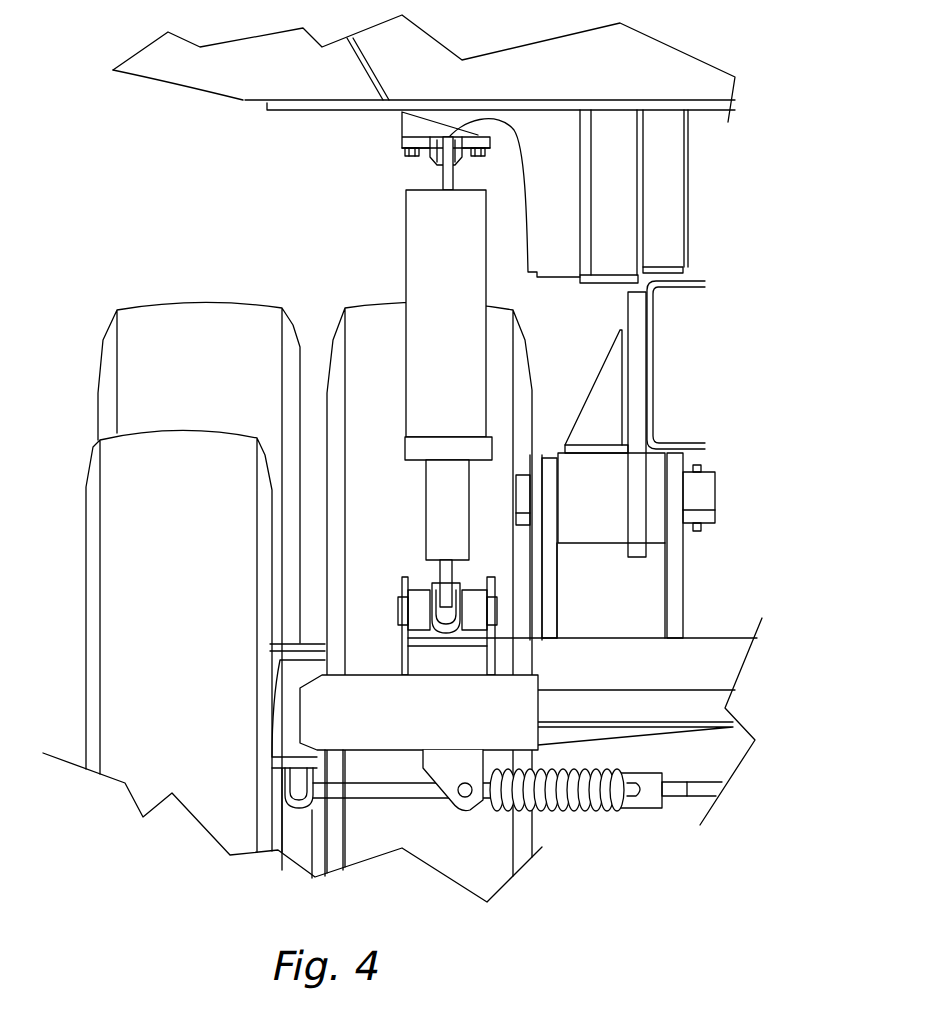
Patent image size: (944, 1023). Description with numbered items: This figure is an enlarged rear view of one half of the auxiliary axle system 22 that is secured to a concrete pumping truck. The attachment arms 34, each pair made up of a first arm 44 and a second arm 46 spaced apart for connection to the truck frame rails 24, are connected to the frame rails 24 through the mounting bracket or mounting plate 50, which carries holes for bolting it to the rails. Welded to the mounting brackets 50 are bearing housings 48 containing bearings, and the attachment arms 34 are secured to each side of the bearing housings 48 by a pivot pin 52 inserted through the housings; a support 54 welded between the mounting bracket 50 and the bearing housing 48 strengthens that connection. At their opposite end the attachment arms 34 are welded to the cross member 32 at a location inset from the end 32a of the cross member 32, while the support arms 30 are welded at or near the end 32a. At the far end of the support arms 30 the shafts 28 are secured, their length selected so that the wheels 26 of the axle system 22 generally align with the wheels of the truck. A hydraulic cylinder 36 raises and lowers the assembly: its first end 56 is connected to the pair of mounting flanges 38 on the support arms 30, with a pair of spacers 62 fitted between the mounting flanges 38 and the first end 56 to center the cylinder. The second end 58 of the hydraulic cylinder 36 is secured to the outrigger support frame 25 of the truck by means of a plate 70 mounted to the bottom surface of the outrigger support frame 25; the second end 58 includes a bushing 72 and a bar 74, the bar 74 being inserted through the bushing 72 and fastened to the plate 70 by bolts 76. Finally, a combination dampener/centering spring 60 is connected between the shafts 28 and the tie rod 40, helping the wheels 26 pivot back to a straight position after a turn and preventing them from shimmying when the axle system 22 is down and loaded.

The axle system 22 is at (699, 178).
The truck frame rails 24 is at (705, 281).
The outrigger support frame 25 is at (660, 52).
The wheels 26 is at (206, 810).
The shafts 28 is at (421, 707).
The support arms 30 is at (423, 635).
The cross member 32 is at (676, 668).
The end of the cross member 32a is at (404, 640).
The attachment arms 34 is at (637, 466).
The hydraulic cylinder 36 is at (399, 273).
The mounting flanges 38 is at (462, 592).
The tie rod 40 is at (688, 797).
The first arm 44 is at (560, 578).
The second arm 46 is at (686, 572).
The bearing housings 48 is at (604, 494).
The mounting brackets 50 is at (637, 346).
The pivot pin 52 is at (522, 472).
The support 54 is at (602, 385).
The first end of the hydraulic cylinder 56 is at (440, 563).
The second end of the hydraulic cylinder 58 is at (443, 177).
The combination dampener/centering spring 60 is at (558, 810).
The spacers 62 is at (478, 622).
The plate 70 is at (404, 118).
The bushing 72 is at (476, 135).
The bar 74 is at (404, 143).
The bolts 76 is at (414, 157).